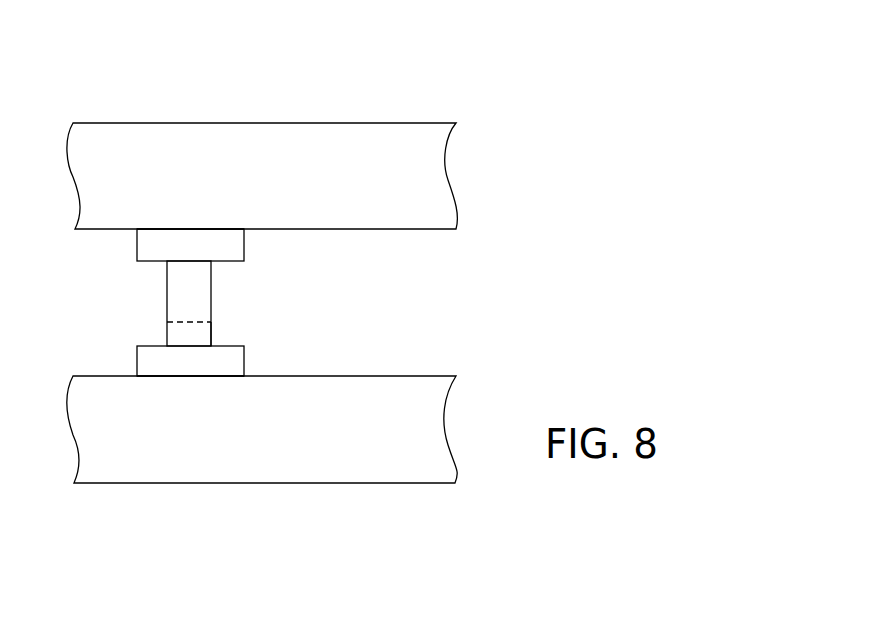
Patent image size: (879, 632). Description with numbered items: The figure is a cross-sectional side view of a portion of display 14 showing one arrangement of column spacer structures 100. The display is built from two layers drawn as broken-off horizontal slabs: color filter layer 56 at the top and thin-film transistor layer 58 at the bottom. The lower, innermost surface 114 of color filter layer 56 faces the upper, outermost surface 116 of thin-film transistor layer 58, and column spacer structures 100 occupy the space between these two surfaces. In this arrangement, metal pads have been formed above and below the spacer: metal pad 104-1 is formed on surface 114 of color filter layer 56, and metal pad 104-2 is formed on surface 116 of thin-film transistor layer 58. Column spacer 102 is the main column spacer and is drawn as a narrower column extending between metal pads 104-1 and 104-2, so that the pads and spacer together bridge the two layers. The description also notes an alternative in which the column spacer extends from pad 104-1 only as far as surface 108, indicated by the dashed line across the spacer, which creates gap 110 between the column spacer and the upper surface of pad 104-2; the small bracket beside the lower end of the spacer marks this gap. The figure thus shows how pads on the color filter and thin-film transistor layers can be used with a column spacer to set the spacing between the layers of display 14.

The display 14 is at (499, 51).
The color filter layer 56 is at (375, 138).
The thin-film transistor layer 58 is at (376, 466).
The column spacer structures 100 is at (187, 302).
The column spacer 102 is at (165, 290).
The metal pad 104-1 is at (246, 242).
The metal pad 104-2 is at (246, 355).
The surface 108 is at (192, 322).
The gap 110 is at (218, 322).
The lower surface of color filter layer 114 is at (385, 230).
The upper surface of thin-film transistor layer 116 is at (377, 376).